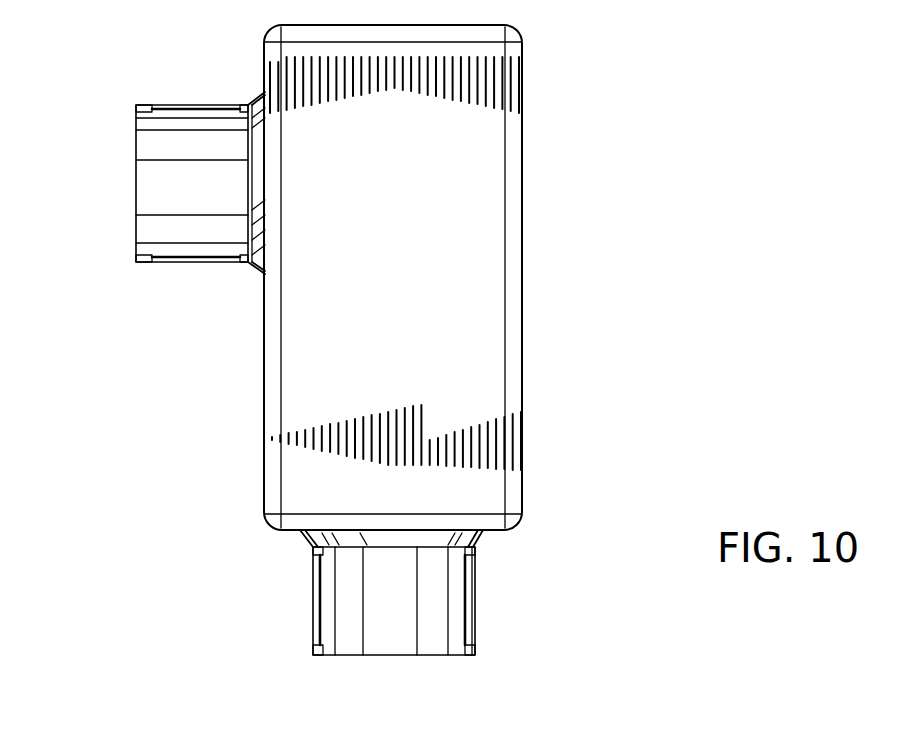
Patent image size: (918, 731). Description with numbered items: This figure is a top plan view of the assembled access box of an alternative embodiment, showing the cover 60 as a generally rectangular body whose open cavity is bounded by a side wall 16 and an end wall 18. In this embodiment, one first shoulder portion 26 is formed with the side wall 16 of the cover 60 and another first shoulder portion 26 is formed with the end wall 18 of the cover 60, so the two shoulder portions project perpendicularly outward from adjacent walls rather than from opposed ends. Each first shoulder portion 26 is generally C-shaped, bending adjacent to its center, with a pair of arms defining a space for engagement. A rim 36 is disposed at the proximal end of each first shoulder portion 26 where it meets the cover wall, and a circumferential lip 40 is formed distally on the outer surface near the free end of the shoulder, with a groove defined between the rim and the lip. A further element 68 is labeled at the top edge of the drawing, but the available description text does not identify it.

The cover 60 is at (387, 346).
The side wall 16 is at (520, 418).
The end wall 18 is at (465, 25).
The wall portion 68 is at (612, 2).
The first shoulder portion 26 is at (152, 145).
The circumferential lip 40 is at (148, 262).
The rim 36 is at (252, 268).